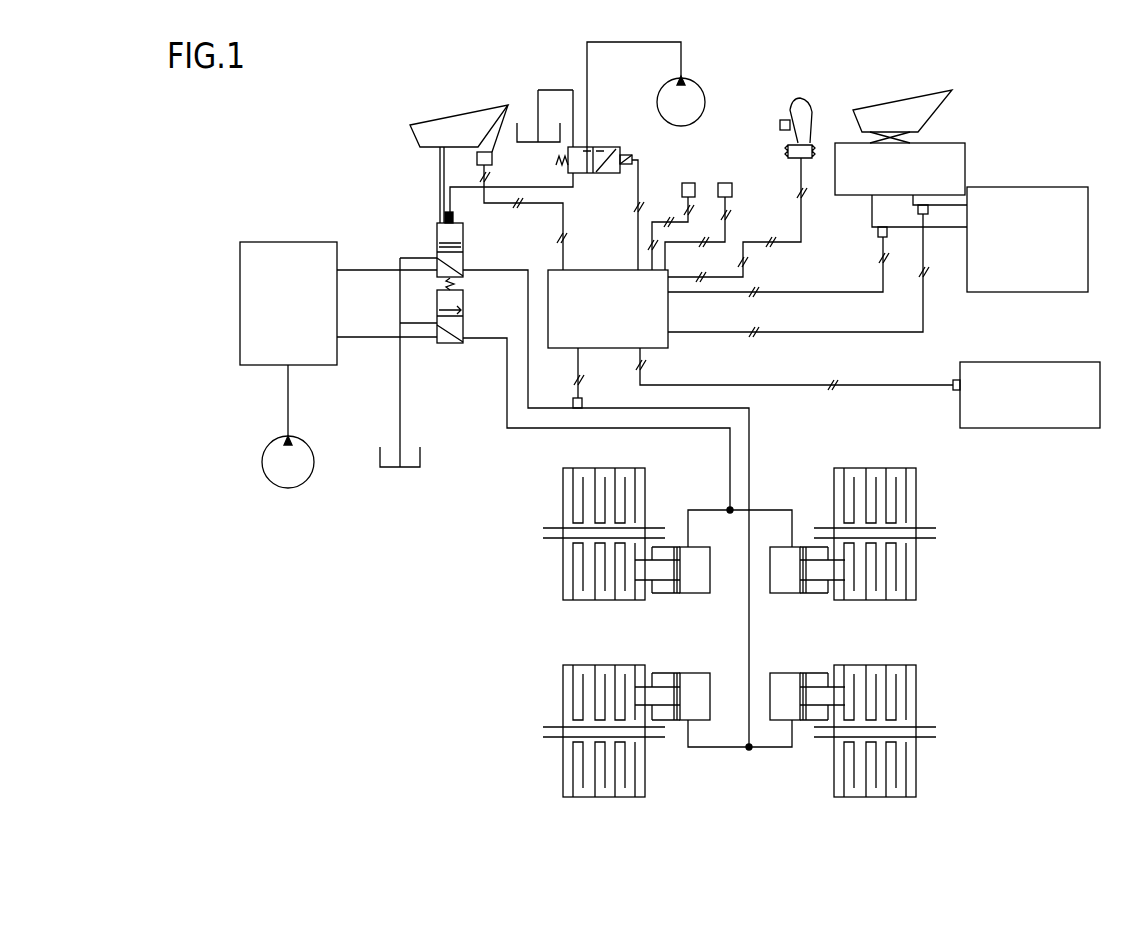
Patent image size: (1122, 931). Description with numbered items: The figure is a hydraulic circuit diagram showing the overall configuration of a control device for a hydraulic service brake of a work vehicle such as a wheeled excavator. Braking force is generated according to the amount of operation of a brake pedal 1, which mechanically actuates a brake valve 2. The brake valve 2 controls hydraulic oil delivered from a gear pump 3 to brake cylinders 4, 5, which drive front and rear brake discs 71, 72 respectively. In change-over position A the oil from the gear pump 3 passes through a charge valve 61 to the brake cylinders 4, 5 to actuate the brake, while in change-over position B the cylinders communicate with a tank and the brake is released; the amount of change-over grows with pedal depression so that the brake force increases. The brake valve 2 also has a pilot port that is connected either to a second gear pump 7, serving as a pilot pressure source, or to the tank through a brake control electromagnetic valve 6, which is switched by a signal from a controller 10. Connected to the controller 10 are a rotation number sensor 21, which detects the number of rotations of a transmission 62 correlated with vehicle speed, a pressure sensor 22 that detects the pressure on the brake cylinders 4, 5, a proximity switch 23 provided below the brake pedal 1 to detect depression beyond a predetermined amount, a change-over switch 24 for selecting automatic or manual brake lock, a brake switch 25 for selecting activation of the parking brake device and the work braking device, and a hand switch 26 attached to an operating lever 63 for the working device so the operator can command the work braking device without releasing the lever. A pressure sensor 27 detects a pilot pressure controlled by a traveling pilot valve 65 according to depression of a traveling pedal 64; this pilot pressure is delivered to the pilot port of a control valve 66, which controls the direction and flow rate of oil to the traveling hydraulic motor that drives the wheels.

The brake pedal 1 is at (415, 138).
The brake valve 2 is at (465, 233).
The gear pump 3 is at (313, 472).
The brake cylinder 4 is at (698, 593).
The brake cylinder 5 is at (710, 702).
The brake control electromagnetic valve 6 is at (625, 150).
The gear pump 7 is at (698, 76).
The controller 10 is at (608, 268).
The rotation number sensor 21 is at (955, 392).
The pressure sensor 22 is at (582, 397).
The proximity switch 23 is at (515, 108).
The change-over switch 24 is at (690, 183).
The brake switch 25 is at (733, 193).
The hand switch 26 is at (783, 130).
The pressure sensor 27 is at (928, 208).
The charge valve 61 is at (330, 242).
The transmission 62 is at (1012, 428).
The operating lever 63 is at (815, 102).
The traveling pedal 64 is at (943, 92).
The traveling pilot valve 65 is at (965, 158).
The control valve 66 is at (1013, 293).
The brake disc 71 is at (583, 602).
The brake disc 72 is at (583, 798).